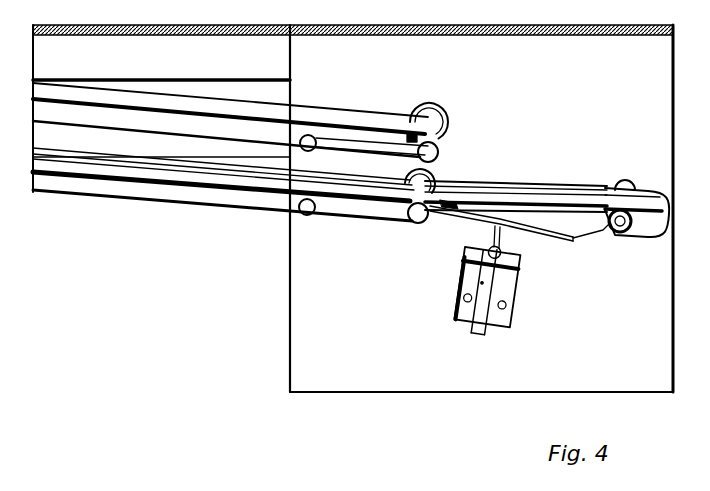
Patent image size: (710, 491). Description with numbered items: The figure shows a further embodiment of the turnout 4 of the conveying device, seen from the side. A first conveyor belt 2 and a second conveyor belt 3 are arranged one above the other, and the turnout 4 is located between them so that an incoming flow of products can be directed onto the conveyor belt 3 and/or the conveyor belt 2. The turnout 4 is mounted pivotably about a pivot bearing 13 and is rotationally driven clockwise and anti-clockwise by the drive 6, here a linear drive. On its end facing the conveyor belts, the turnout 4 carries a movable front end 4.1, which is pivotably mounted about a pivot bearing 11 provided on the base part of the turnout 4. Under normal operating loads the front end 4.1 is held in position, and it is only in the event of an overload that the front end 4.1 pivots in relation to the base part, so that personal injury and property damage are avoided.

The first conveyor belt 2 is at (358, 120).
The second conveyor belt 3 is at (373, 215).
The turnout 4 is at (538, 157).
The front end of the turnout 4.1 is at (440, 230).
The drive 6 is at (522, 298).
The pivot bearing of the front end 11 is at (452, 213).
The pivot bearing of the turnout 13 is at (618, 234).